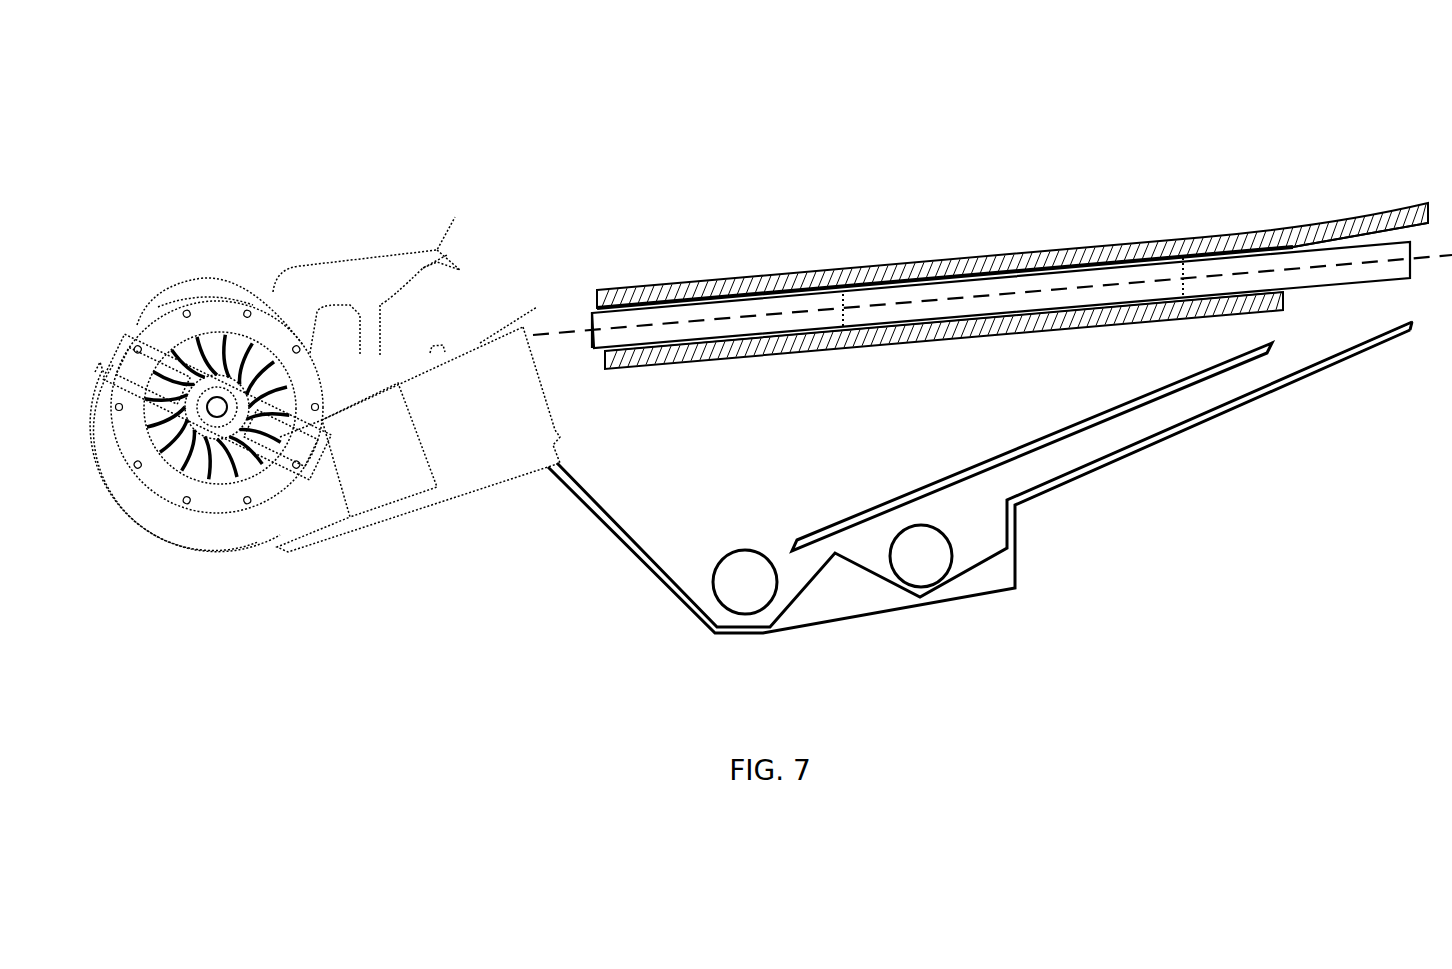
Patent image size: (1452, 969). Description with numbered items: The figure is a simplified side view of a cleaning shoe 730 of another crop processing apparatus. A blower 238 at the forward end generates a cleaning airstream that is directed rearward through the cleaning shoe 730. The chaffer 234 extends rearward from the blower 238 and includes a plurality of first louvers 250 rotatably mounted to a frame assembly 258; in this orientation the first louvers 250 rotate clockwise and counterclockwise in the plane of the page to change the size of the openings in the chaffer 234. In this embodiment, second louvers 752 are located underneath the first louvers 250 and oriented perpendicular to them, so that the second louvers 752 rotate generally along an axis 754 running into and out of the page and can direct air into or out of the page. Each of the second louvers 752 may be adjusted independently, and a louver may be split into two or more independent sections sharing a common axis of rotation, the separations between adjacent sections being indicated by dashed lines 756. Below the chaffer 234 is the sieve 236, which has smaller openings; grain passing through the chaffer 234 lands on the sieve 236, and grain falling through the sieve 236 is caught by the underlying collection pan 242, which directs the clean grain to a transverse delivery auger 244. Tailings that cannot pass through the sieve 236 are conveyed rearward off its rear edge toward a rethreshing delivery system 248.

The cleaning shoe 730 is at (364, 124).
The blower 238 is at (243, 475).
The second louvers 752 is at (617, 313).
The axis 754 is at (573, 330).
The dashed lines 756 is at (843, 296).
The chaffer 234 is at (1072, 245).
The first louvers 250 is at (1157, 248).
The frame assembly 258 is at (1245, 236).
The transverse delivery auger 244 is at (705, 602).
The rethreshing delivery system 248 is at (918, 582).
The collection pan 242 is at (1118, 410).
The sieve 236 is at (1278, 308).